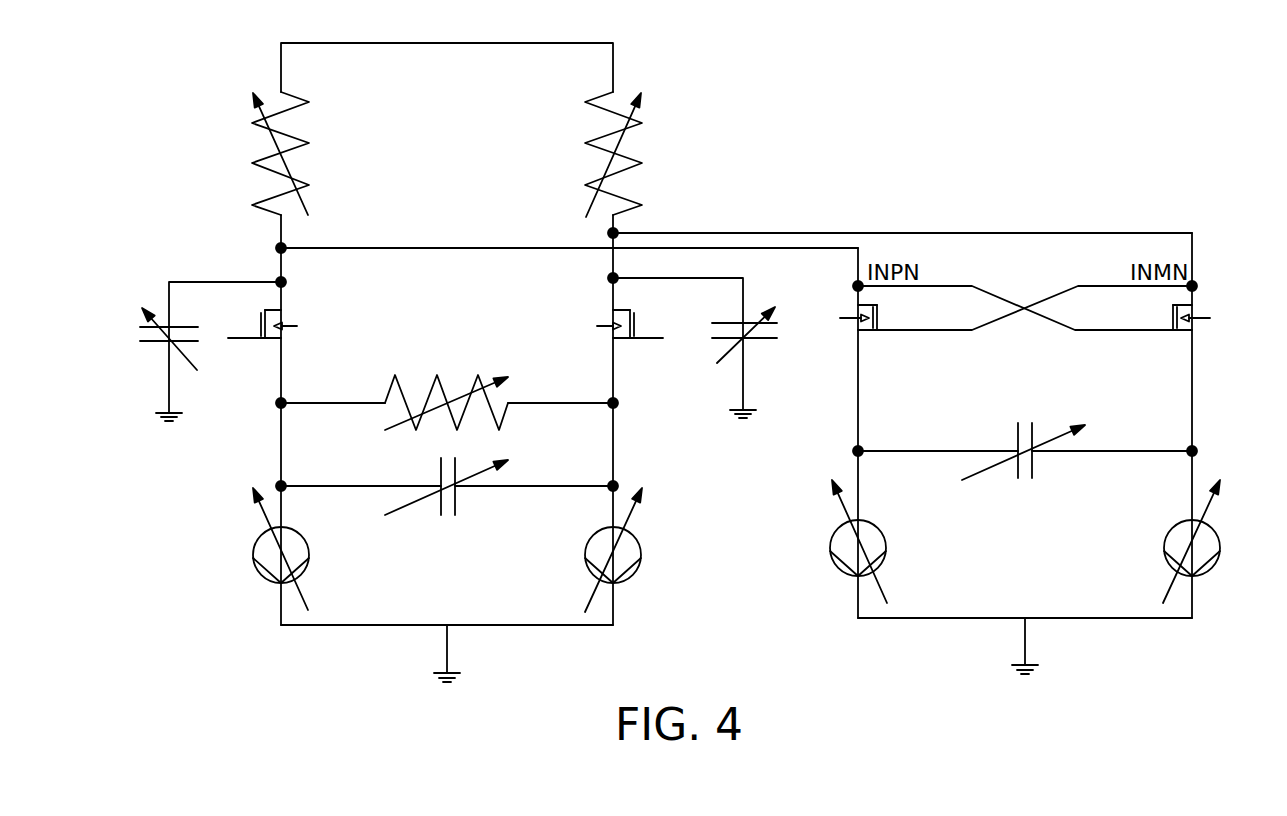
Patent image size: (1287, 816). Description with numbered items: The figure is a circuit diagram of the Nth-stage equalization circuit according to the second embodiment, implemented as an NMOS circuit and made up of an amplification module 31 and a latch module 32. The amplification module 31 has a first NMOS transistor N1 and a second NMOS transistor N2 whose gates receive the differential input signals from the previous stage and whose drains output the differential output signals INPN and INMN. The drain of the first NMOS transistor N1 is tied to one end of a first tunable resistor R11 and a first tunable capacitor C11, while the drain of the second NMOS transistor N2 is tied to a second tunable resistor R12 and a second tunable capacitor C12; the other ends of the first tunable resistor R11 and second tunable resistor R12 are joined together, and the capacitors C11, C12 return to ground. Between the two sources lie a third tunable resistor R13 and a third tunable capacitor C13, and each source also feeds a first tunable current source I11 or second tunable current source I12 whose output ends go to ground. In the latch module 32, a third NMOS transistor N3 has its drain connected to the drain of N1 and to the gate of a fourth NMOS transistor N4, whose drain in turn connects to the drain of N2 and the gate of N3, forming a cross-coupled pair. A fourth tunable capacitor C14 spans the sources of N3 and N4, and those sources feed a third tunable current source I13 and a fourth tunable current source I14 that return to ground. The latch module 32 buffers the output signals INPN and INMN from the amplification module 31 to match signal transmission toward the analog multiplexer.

The amplification module 31 is at (184, 120).
The latch module 32 is at (1024, 160).
The first tunable resistor R11 is at (312, 153).
The second tunable resistor R12 is at (590, 154).
The third tunable resistor R13 is at (447, 384).
The first tunable capacitor C11 is at (147, 333).
The second tunable capacitor C12 is at (766, 335).
The third tunable capacitor C13 is at (447, 481).
The fourth tunable capacitor C14 is at (1025, 433).
The first NMOS transistor N1 is at (284, 324).
The second NMOS transistor N2 is at (611, 324).
The third NMOS transistor N3 is at (870, 333).
The fourth NMOS transistor N4 is at (1170, 333).
The first tunable current source I11 is at (260, 549).
The second tunable current source I12 is at (638, 550).
The third tunable current source I13 is at (879, 541).
The fourth tunable current source I14 is at (1213, 541).
The differential output signal INPN is at (218, 339).
The differential output signal INMN is at (684, 338).